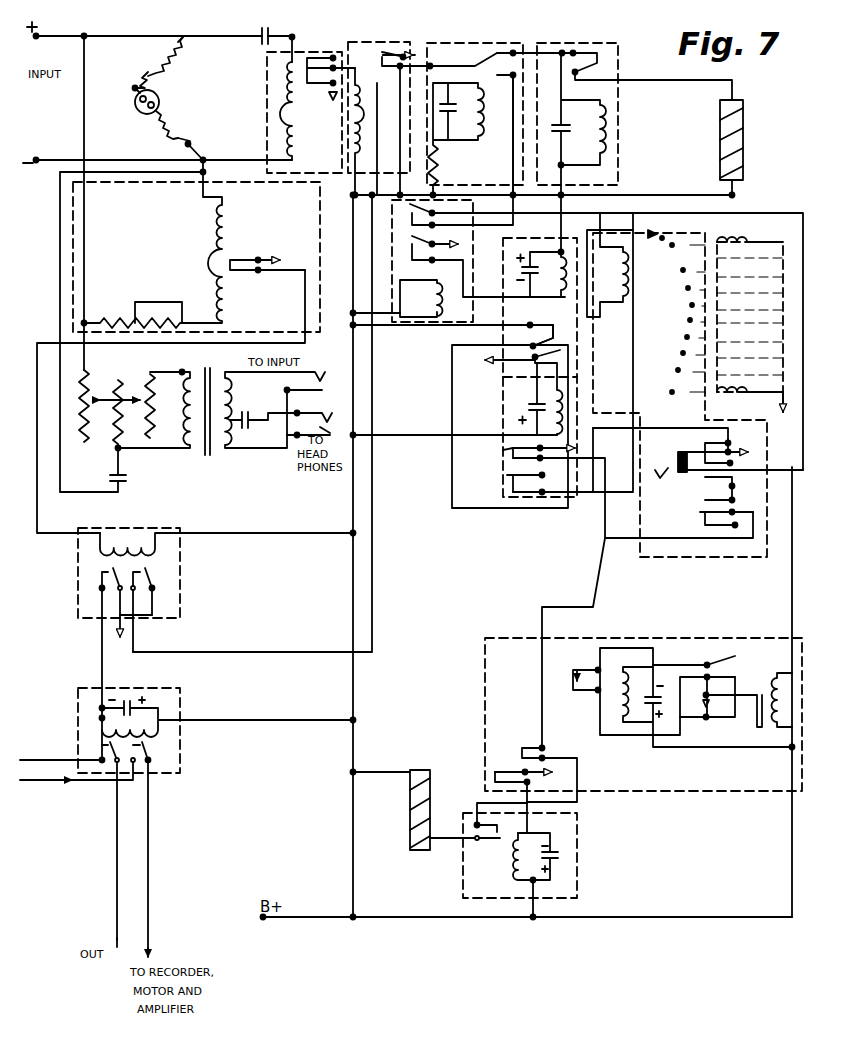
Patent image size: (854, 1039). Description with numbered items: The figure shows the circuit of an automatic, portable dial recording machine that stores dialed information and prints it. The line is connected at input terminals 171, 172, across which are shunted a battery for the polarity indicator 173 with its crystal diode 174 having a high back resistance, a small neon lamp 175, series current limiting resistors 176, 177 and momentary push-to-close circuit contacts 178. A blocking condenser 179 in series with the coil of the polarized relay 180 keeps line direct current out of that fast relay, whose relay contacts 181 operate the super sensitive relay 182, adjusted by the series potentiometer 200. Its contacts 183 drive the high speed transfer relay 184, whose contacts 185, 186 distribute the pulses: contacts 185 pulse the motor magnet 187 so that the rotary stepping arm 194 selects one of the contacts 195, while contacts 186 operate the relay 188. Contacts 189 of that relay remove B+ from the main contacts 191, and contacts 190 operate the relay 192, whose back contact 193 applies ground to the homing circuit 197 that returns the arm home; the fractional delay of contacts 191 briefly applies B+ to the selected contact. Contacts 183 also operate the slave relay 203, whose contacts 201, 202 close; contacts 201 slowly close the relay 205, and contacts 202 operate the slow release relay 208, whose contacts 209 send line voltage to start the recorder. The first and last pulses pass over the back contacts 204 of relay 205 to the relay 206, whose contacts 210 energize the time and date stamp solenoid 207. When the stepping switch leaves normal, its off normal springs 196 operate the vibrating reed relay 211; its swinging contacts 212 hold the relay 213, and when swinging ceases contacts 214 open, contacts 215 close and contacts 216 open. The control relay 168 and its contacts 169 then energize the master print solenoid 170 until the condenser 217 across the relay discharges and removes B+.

The input terminal 171 is at (40, 35).
The input terminal 172 is at (37, 157).
The polarity indicator 173 is at (149, 53).
The crystal diode 174 is at (137, 76).
The neon lamp 175 is at (164, 97).
The current limiting resistor 176 is at (160, 126).
The current limiting resistor 177 is at (176, 50).
The push-to-close circuit contacts 178 is at (178, 142).
The blocking condenser 179 is at (277, 32).
The polarized relay 180 is at (302, 58).
The relay contacts 181 is at (347, 60).
The super sensitive relay 182 is at (350, 118).
The relay contacts 183 is at (248, 252).
The high speed transfer relay 184 is at (448, 312).
The relay contacts 185 is at (400, 212).
The relay contacts 186 is at (400, 243).
The motor magnet of stepping switch 187 is at (627, 303).
The relay 188 is at (543, 309).
The relay contacts 189 is at (567, 342).
The relay contacts 190 is at (513, 367).
The main contacts 191 is at (503, 483).
The relay 192 is at (520, 406).
The back contact 193 is at (501, 450).
The rotary stepping arm 194 is at (660, 249).
The stepping switch contacts 195 is at (660, 350).
The off normal springs 196 is at (664, 453).
The homing circuit 197 is at (699, 511).
The series potentiometer 200 is at (125, 306).
The slave relay contacts 201 is at (162, 607).
The slave relay contacts 202 is at (88, 598).
The slave relay 203 is at (172, 544).
The back contacts 204 is at (483, 55).
The relay 205 is at (489, 136).
The relay 206 is at (610, 128).
The time and date stamp solenoid 207 is at (749, 102).
The slow release relay 208 is at (87, 747).
The relay contacts 209 is at (127, 742).
The relay contacts 210 is at (608, 61).
The vibrating reed relay 211 is at (776, 660).
The reed contacts 212 is at (699, 654).
The relay 213 is at (617, 652).
The relay contacts 214 is at (564, 670).
The relay contacts 215 is at (514, 747).
The relay contacts 216 is at (486, 768).
The condenser 217 is at (567, 855).
The control relay 168 is at (507, 869).
The control relay contacts 169 is at (478, 846).
The master print solenoid 170 is at (408, 760).